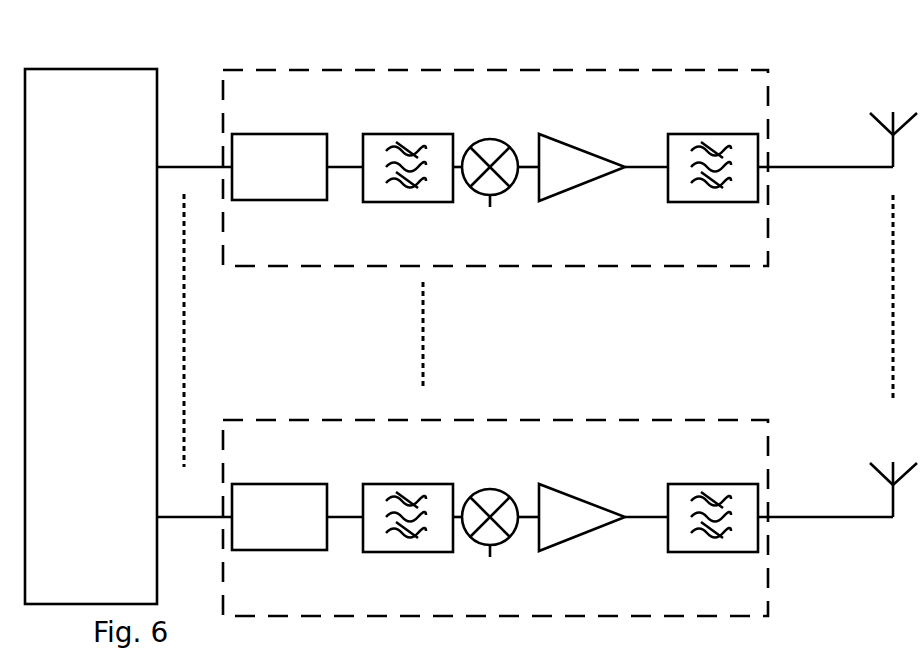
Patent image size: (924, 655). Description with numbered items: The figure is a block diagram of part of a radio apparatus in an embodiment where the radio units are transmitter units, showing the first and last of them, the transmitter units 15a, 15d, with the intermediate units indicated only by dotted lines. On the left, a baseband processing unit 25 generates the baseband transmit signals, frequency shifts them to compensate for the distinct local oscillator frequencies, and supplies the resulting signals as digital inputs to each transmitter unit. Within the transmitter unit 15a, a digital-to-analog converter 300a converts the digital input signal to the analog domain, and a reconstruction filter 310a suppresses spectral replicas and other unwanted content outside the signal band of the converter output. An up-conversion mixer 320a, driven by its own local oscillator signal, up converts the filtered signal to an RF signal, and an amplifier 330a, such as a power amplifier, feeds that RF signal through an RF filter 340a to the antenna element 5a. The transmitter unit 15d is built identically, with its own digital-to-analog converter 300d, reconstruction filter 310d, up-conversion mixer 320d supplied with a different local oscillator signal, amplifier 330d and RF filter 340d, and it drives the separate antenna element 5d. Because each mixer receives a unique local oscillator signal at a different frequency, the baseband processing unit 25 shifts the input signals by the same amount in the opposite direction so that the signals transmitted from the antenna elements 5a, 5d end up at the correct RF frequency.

The baseband processing unit 25 is at (80, 404).
The transmitter unit 15a is at (565, 70).
The transmitter unit 15d is at (495, 491).
The digital-to-analog converter 300a is at (257, 194).
The digital-to-analog converter 300d is at (279, 517).
The reconstruction filter 310a is at (405, 133).
The reconstruction filter 310d is at (408, 491).
The up-conversion mixer 320a is at (490, 139).
The up-conversion mixer 320d is at (490, 511).
The amplifier 330a is at (598, 183).
The amplifier 330d is at (582, 540).
The RF filter 340a is at (725, 202).
The RF filter 340d is at (713, 547).
The antenna element 5a is at (893, 148).
The antenna element 5d is at (877, 489).